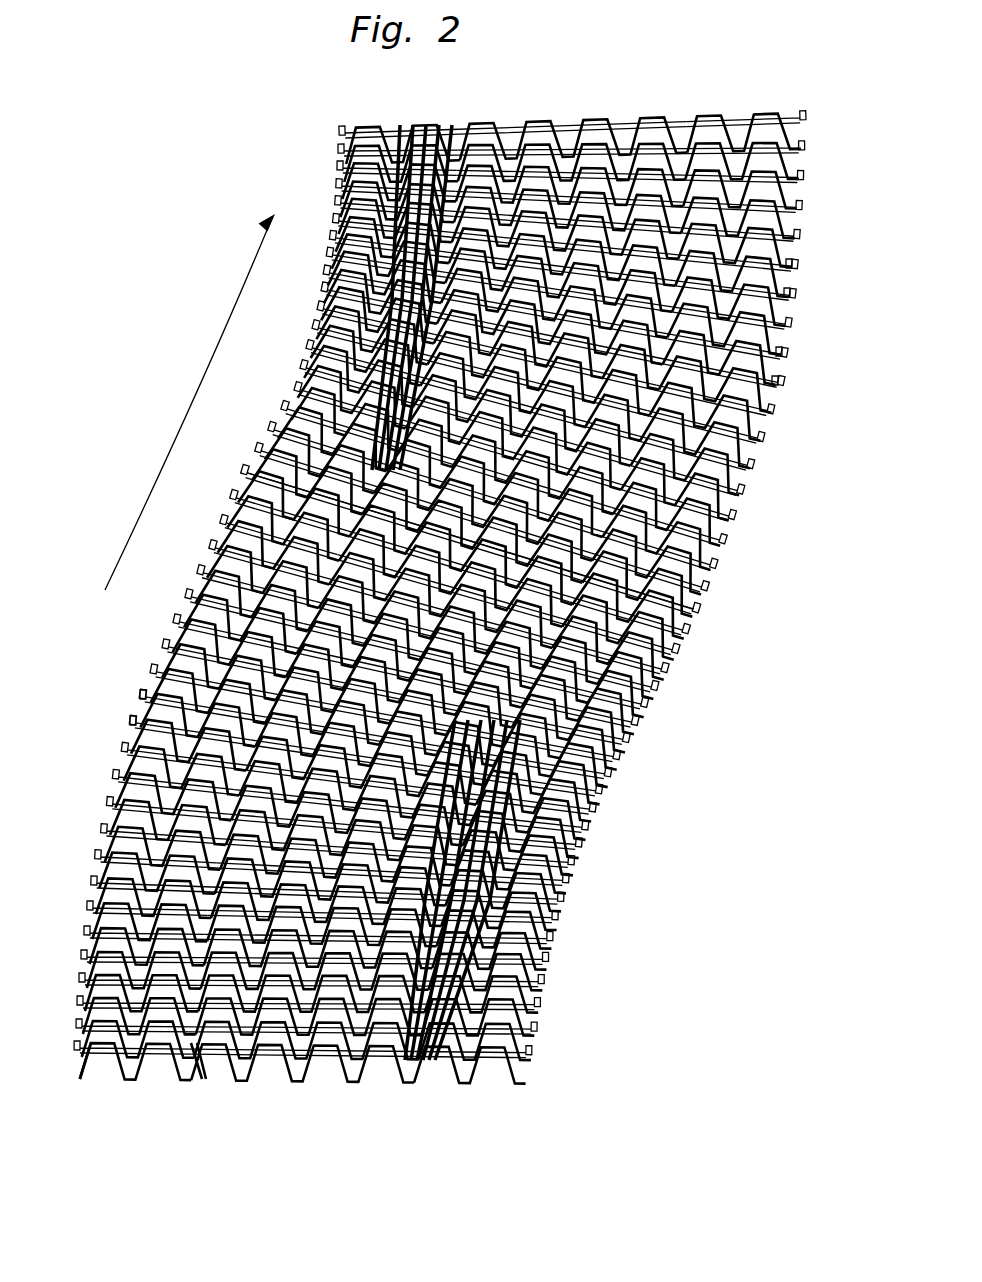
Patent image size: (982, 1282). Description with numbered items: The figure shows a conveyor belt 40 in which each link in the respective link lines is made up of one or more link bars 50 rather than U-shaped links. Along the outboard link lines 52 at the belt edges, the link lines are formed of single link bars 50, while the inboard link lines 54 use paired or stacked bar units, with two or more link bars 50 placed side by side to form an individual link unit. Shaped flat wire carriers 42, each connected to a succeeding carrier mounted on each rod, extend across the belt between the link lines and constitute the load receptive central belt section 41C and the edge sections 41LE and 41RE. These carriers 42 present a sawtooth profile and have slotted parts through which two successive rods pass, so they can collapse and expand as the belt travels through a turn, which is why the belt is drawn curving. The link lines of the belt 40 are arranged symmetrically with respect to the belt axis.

The belt 40 is at (648, 99).
The left edge belt section 41LE is at (222, 737).
The central belt section 41C is at (482, 576).
The right edge belt section 41RE is at (716, 496).
The flat wire carriers 42 is at (250, 462).
The link bars 50 is at (796, 263).
The outboard link lines 52 is at (87, 1082).
The inboard link lines 54 is at (200, 1082).